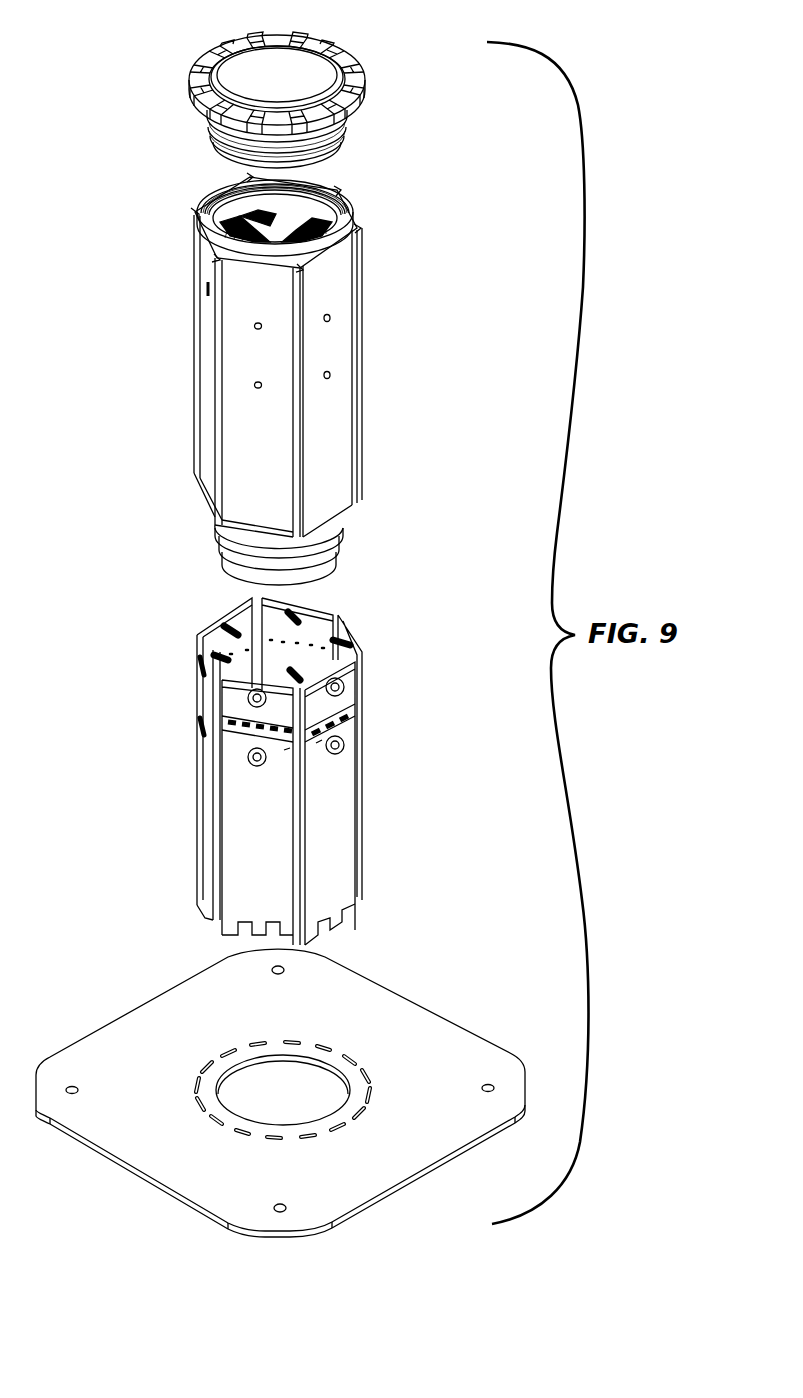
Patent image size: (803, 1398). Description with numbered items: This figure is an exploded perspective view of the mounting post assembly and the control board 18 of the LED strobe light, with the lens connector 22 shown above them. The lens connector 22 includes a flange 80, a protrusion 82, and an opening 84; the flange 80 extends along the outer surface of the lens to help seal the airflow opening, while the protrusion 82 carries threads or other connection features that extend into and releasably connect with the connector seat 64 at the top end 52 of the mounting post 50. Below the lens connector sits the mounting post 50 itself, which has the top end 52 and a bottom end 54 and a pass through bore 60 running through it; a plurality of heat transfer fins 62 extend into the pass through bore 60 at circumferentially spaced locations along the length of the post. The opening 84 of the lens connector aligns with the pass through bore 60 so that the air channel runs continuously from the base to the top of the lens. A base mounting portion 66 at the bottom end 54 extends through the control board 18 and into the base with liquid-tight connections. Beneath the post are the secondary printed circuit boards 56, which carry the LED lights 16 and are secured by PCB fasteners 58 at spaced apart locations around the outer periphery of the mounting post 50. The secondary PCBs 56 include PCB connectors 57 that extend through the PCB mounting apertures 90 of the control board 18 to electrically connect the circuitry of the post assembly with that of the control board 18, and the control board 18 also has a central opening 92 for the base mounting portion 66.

The lens connector 22 is at (351, 44).
The flange 80 is at (356, 70).
The protrusion 82 is at (333, 149).
The opening 84 is at (242, 78).
The mounting post 50 is at (354, 222).
The top end 52 is at (358, 230).
The connector seat 64 is at (252, 205).
The heat transfer fins 62 is at (300, 260).
The pass through bore 60 is at (292, 226).
The bottom end 54 is at (354, 518).
The base mounting portion 66 is at (335, 556).
The secondary printed circuit boards 56 is at (283, 860).
The PCB fasteners 58 is at (341, 686).
The LED lights 16 is at (316, 743).
The PCB connectors 57 is at (298, 935).
The control board 18 is at (430, 1006).
The PCB mounting apertures 90 is at (322, 1044).
The opening 92 is at (307, 1101).